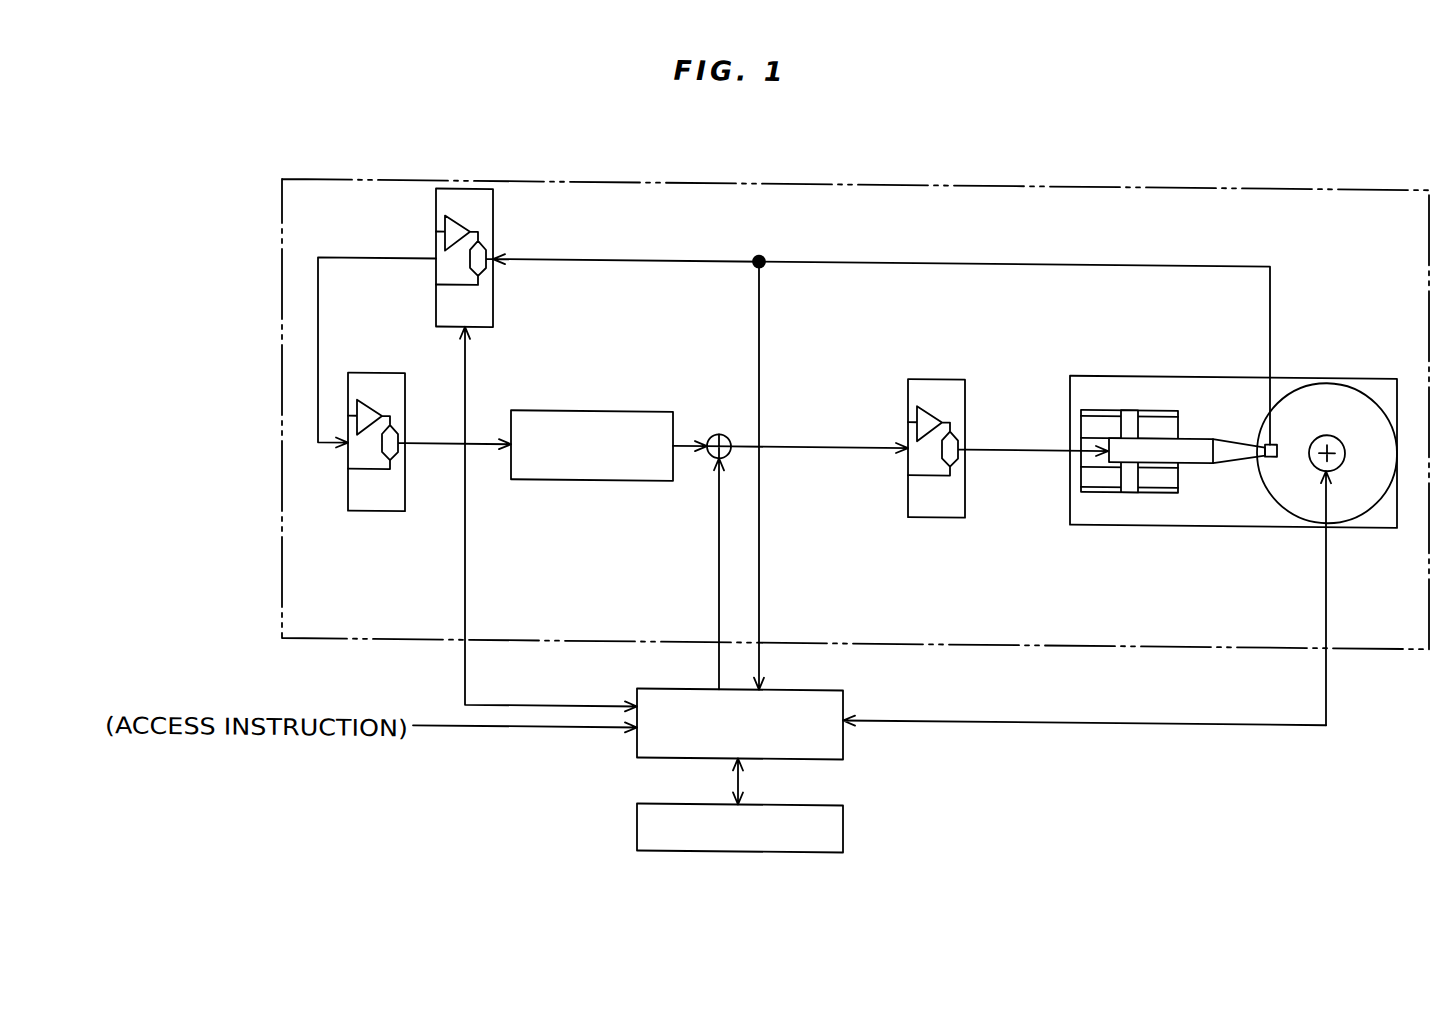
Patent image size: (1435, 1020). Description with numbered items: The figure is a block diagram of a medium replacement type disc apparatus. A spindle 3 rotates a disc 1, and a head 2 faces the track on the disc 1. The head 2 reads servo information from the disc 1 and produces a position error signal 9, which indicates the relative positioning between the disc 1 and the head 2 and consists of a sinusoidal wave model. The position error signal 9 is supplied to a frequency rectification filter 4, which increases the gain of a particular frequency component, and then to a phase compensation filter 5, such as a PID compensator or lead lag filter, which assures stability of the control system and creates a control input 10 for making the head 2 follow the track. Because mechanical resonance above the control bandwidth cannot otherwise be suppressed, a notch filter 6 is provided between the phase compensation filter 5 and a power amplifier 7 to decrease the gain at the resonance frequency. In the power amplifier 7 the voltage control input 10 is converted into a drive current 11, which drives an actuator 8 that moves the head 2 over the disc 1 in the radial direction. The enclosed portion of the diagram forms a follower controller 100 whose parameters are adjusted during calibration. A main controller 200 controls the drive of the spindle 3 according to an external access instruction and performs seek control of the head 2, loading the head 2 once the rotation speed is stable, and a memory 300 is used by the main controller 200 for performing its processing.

The disc 1 is at (1343, 383).
The head 2 is at (1260, 438).
The spindle 3 is at (1311, 431).
The frequency rectification filter 4 is at (494, 214).
The phase compensation filter 5 is at (370, 372).
The notch filter 6 is at (563, 408).
The power amplifier 7 is at (935, 373).
The actuator 8 is at (1132, 484).
The position error signal 9 is at (834, 257).
The control input 10 is at (839, 443).
The drive current 11 is at (1032, 443).
The follower controller 100 is at (967, 179).
The main controller 200 is at (843, 692).
The memory 300 is at (843, 822).